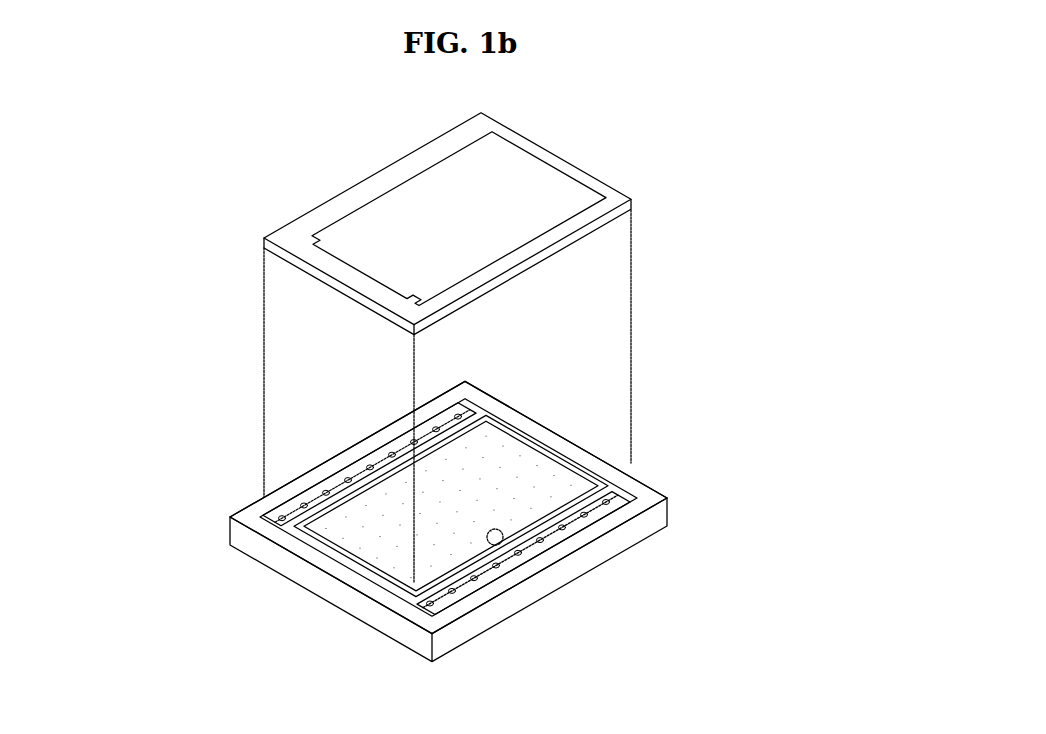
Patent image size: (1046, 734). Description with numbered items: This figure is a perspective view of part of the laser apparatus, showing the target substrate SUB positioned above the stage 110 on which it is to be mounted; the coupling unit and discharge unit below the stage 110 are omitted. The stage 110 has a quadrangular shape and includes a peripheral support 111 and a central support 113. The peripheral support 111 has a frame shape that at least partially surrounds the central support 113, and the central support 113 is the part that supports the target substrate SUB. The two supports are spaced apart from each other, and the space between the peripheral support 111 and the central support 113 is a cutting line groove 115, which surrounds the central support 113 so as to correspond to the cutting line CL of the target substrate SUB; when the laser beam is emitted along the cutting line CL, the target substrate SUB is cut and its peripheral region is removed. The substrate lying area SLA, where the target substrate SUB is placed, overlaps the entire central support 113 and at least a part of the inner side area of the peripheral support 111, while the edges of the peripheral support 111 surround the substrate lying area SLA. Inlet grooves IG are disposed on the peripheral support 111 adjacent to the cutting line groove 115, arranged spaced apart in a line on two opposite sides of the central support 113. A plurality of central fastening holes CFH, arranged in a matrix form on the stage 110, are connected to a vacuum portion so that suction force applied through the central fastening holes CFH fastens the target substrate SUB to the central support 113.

The target substrate SUB is at (607, 189).
The cutting line CL is at (536, 156).
The stage 110 is at (311, 596).
The peripheral support 111 is at (643, 497).
The central support 113 is at (508, 432).
The cutting line groove 115 is at (560, 437).
The substrate lying area SLA is at (401, 606).
The inlet groove IG is at (556, 543).
The central fastening hole CFH is at (500, 541).